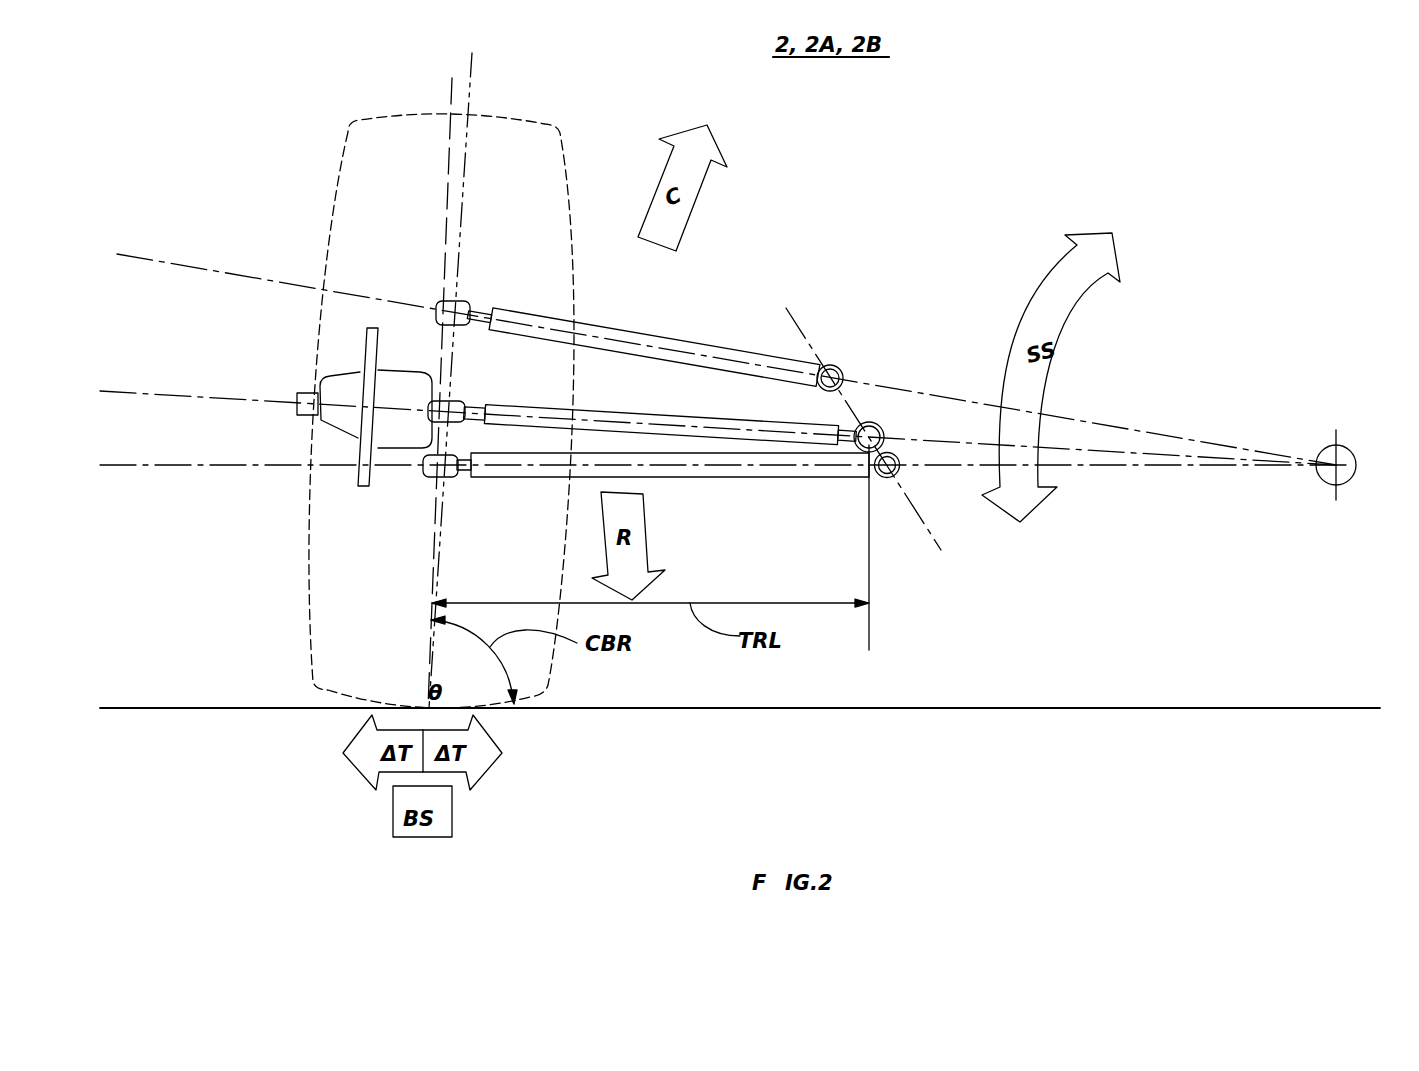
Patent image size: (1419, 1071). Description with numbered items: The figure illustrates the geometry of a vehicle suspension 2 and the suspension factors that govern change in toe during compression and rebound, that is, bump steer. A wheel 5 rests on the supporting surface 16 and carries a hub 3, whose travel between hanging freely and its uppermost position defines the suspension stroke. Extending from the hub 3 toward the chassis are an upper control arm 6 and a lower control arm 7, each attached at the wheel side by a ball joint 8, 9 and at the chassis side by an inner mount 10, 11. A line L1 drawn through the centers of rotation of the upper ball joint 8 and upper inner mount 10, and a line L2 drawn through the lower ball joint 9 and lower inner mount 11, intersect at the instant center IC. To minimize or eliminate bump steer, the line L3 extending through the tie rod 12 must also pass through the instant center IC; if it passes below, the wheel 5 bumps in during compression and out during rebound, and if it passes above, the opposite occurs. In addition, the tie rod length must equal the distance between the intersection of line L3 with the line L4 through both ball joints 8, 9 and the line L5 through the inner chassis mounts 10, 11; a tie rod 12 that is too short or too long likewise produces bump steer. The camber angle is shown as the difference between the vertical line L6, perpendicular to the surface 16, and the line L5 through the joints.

The vehicle suspension 2 is at (579, 436).
The hub 3 is at (332, 422).
The wheel 5 is at (352, 160).
The upper control arm 6 is at (635, 328).
The lower control arm 7 is at (495, 478).
The upper ball joint 8 is at (467, 303).
The lower ball joint 9 is at (447, 478).
The inner mount 10 is at (830, 364).
The inner mount 11 is at (893, 479).
The tie rod 12 is at (650, 415).
The supporting surface 16 is at (1318, 708).
The line through upper control arm joints L1 is at (135, 254).
The line through lower control arm joints L2 is at (122, 465).
The line through tie rod L3 is at (122, 392).
The line through upper and lower ball joints L4 is at (471, 80).
The line through inner chassis mounts L5 is at (788, 308).
The vertical alignment line L6 is at (452, 92).
The instant center IC is at (1357, 475).